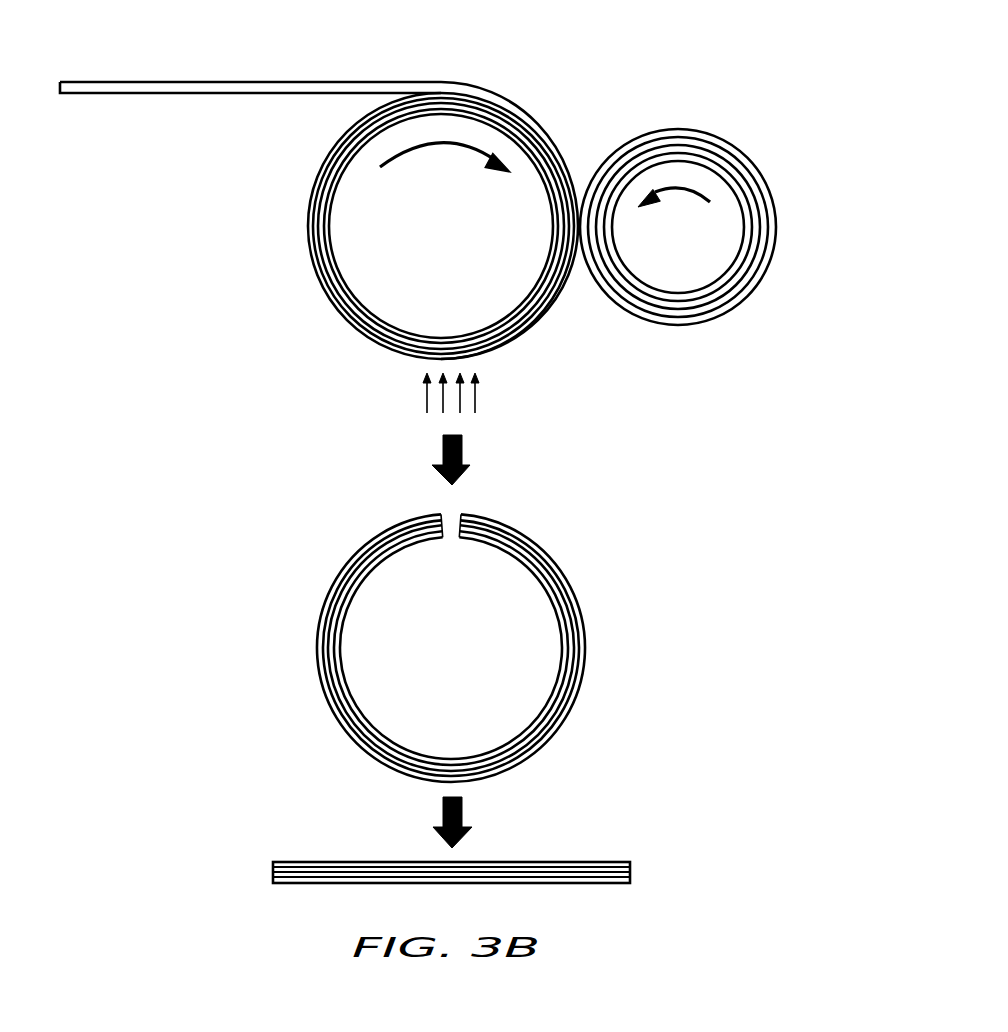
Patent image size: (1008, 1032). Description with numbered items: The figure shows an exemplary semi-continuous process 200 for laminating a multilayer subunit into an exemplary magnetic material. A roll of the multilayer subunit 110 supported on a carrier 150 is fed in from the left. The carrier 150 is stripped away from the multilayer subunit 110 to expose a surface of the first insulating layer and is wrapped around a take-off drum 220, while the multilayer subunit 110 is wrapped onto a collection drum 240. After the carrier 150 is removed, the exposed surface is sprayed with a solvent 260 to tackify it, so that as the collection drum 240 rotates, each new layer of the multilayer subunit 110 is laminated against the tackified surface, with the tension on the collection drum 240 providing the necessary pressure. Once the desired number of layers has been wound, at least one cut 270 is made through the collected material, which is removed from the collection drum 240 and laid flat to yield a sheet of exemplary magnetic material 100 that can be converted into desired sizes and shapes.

The magnetic material 100 is at (590, 570).
The multilayer subunit 110 is at (102, 95).
The carrier 150 is at (111, 83).
The semi-continuous process 200 is at (737, 64).
The take-off drum 220 is at (712, 252).
The collection drum 240 is at (340, 221).
The solvent 260 is at (477, 398).
The cut 270 is at (450, 516).